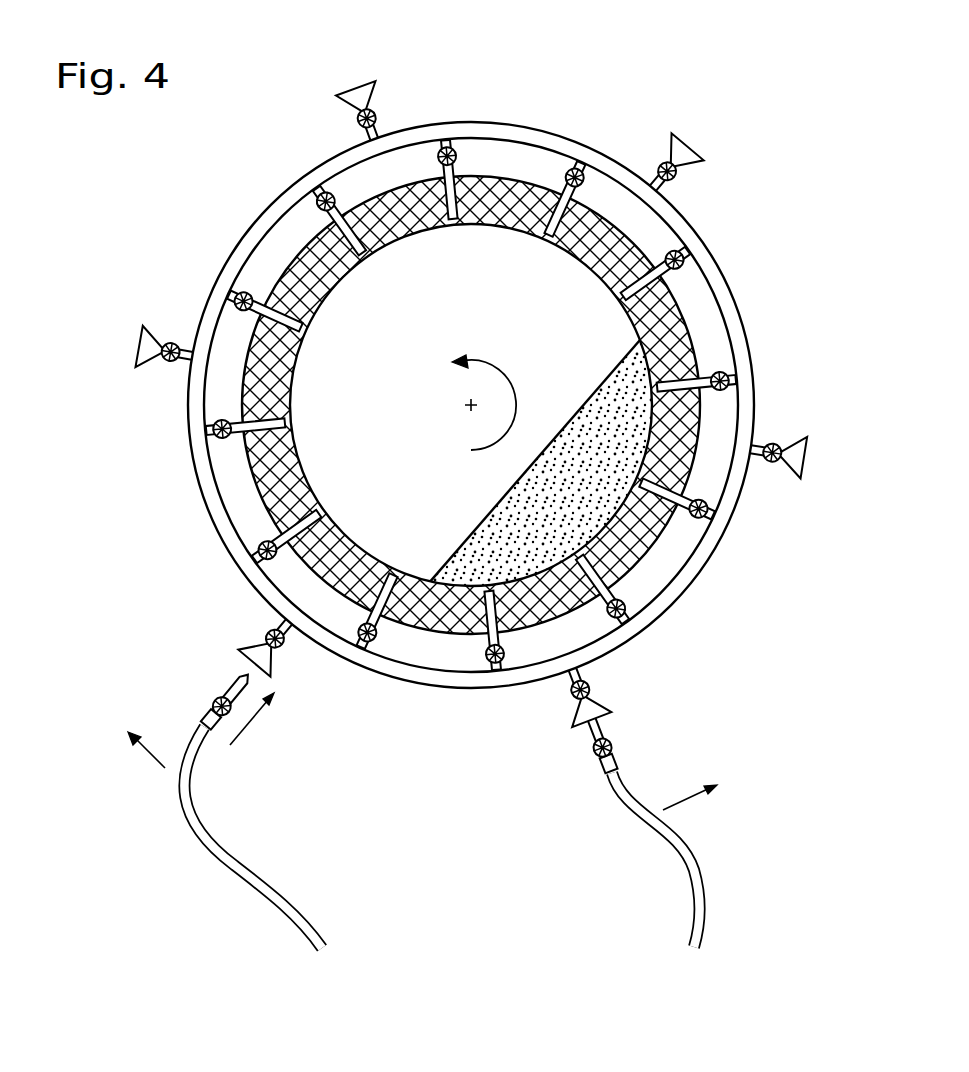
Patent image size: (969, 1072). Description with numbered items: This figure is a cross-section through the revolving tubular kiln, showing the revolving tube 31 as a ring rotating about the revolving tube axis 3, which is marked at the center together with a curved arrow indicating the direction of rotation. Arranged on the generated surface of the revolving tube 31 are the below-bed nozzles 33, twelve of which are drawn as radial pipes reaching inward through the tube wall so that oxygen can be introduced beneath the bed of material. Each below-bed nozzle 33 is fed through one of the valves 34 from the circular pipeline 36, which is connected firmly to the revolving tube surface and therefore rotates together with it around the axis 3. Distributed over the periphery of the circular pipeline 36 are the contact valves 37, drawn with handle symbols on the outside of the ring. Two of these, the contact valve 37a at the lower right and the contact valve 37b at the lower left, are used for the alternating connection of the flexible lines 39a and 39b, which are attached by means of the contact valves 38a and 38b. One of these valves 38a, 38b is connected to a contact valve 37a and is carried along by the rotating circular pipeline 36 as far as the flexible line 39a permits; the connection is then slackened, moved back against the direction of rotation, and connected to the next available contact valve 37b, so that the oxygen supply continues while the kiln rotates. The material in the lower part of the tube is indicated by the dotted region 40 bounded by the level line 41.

The revolving tube axis 3 is at (467, 402).
The revolving tube 31 is at (690, 343).
The below-bed nozzles 33 is at (307, 333).
The valves 34 is at (260, 548).
The circular pipeline 36 is at (228, 272).
The contact valves 37 is at (380, 110).
The contact valve 37a is at (600, 695).
The contact valve 37b is at (272, 660).
The contact valve 38a is at (612, 755).
The contact valve 38b is at (210, 732).
The flexible line 39a is at (690, 863).
The flexible line 39b is at (308, 907).
The bulk material 40 is at (610, 428).
The material surface level 41 is at (537, 456).